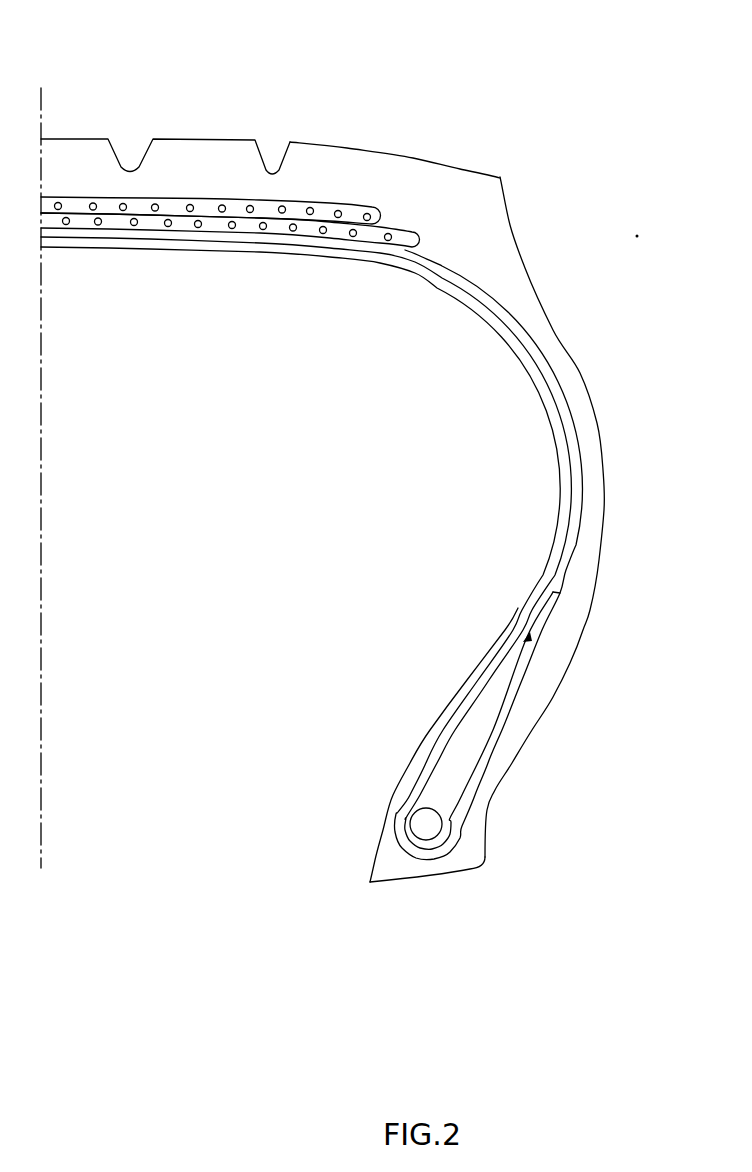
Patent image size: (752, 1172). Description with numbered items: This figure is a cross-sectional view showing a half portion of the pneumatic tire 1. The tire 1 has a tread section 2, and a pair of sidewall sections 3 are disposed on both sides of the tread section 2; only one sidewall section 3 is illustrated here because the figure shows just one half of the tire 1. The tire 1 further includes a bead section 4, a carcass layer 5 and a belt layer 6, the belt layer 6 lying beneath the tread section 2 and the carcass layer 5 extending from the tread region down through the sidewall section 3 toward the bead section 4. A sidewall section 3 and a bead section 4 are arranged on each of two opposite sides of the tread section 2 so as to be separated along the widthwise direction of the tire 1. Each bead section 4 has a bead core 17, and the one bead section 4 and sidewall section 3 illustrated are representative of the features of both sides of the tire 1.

The tire 1 is at (573, 125).
The tread section 2 is at (485, 187).
The sidewall section 3 is at (602, 460).
The bead section 4 is at (480, 870).
The carcass layer 5 is at (537, 335).
The belt layer 6 is at (210, 207).
The bead core 17 is at (425, 832).